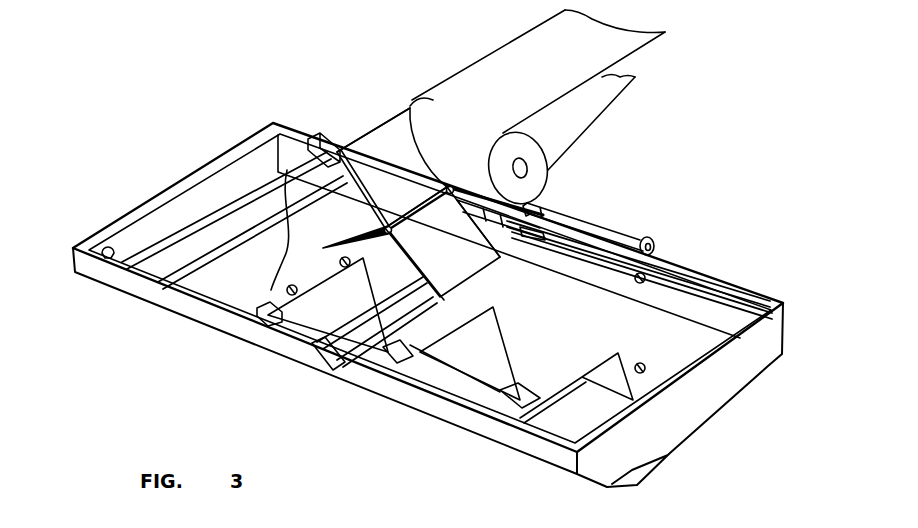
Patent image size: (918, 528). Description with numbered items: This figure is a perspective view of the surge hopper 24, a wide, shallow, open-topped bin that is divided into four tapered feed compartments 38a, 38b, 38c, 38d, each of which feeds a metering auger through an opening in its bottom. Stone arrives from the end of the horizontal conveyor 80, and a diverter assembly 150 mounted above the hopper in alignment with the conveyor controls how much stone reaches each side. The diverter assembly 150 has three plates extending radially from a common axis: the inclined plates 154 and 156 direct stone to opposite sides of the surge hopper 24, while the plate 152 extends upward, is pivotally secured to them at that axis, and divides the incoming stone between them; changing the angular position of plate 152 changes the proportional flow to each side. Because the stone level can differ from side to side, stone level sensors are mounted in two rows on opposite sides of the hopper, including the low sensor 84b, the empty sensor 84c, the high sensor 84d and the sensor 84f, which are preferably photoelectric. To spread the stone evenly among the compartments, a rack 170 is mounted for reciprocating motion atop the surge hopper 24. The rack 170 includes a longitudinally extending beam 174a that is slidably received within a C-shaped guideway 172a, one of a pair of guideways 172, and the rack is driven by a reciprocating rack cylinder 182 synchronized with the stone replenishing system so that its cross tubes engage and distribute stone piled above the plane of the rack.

The surge hopper 24 is at (745, 289).
The horizontal conveyor 80 is at (464, 79).
The diverter assembly 150 is at (357, 140).
The diverter plate 152 is at (383, 130).
The diverter plate 154 is at (240, 300).
The diverter plate 156 is at (445, 285).
The rack 170 is at (518, 248).
The C-shaped guideway 172 is at (104, 260).
The C-shaped guideway 172a is at (593, 245).
The longitudinally extending beam 174a is at (323, 138).
The rack cylinder 182 is at (560, 210).
The feed compartment 38a is at (570, 428).
The feed compartment 38b is at (467, 387).
The feed compartment 38c is at (378, 352).
The feed compartment 38d is at (257, 306).
The low stone level sensor 84b is at (341, 267).
The empty stone level sensor 84c is at (288, 293).
The high stone level sensor 84d is at (645, 276).
The stone level sensor 84f is at (533, 387).